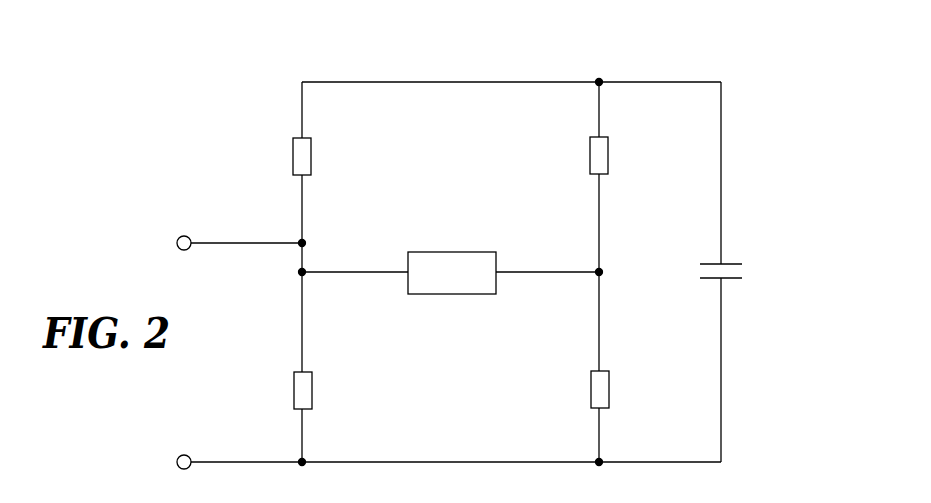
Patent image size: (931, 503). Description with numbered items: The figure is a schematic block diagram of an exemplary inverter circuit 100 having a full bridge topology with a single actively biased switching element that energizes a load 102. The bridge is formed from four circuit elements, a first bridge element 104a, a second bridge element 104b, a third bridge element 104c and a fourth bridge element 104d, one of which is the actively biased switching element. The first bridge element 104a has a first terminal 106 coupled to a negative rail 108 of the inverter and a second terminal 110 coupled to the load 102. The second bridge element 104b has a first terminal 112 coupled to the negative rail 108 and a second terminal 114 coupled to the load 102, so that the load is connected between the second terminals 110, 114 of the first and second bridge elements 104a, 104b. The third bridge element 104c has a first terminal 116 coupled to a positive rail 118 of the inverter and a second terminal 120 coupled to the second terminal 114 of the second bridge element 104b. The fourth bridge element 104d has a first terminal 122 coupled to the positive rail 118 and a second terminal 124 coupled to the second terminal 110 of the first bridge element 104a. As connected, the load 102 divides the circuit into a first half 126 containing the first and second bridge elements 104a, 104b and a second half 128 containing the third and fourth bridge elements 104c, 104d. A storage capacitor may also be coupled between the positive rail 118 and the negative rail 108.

The inverter circuit 100 is at (650, 71).
The load 102 is at (452, 251).
The first bridge element 104a is at (312, 389).
The second bridge element 104b is at (609, 388).
The third bridge element 104c is at (608, 150).
The fourth bridge element 104d is at (310, 158).
The first terminal 106 is at (303, 437).
The negative rail 108 is at (467, 462).
The second terminal 110 is at (303, 334).
The first terminal 112 is at (602, 437).
The second terminal 114 is at (602, 334).
The first terminal 116 is at (600, 125).
The positive rail 118 is at (492, 82).
The second terminal 120 is at (600, 213).
The first terminal 122 is at (302, 124).
The second terminal 124 is at (302, 212).
The first half 126 is at (469, 376).
The second half 128 is at (469, 190).